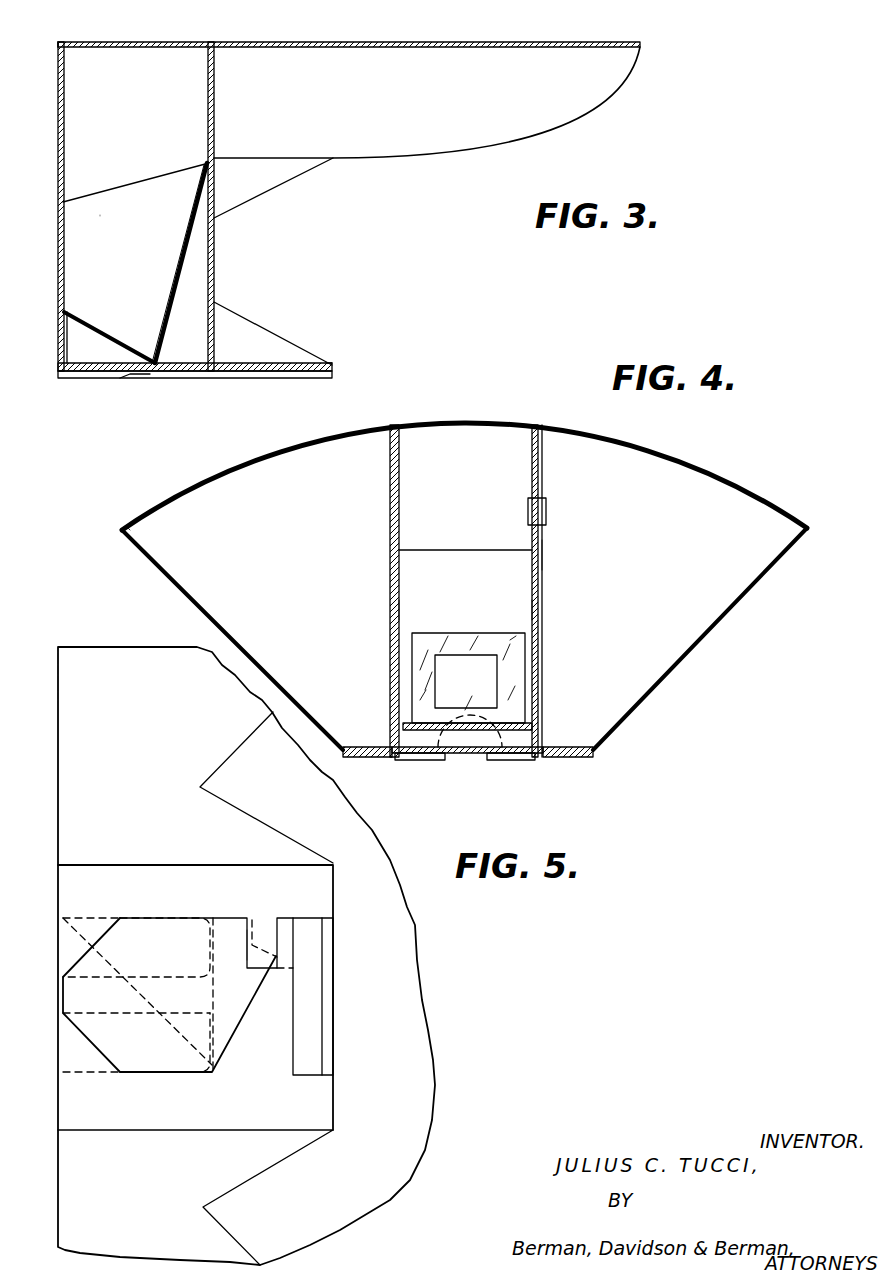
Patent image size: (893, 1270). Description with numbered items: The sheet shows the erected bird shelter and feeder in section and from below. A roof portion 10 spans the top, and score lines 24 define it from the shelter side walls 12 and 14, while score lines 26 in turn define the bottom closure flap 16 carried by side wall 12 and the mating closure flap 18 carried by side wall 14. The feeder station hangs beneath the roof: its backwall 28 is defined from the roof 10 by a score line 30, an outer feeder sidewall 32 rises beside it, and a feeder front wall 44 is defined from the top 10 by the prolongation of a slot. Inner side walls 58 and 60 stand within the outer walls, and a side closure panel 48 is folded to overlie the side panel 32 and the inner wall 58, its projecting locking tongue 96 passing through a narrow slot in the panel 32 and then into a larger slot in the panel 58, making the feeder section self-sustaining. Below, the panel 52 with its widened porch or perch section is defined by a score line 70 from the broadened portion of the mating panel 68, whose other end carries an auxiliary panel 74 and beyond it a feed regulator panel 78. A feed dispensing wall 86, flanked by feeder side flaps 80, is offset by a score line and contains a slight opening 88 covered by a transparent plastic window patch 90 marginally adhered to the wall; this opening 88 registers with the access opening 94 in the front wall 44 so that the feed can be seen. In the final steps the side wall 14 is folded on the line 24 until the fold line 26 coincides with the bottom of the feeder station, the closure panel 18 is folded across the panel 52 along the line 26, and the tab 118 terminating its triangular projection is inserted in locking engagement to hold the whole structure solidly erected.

In FIG. 3, the roof portion 10 is at (363, 43).
In FIG. 4, the roof portion 10 is at (280, 458).
In FIG. 5, the roof portion 10 is at (246, 956).
In FIG. 4, the shelter side wall 12 is at (206, 606).
In FIG. 5, the shelter side wall 12 is at (195, 1197).
In FIG. 3, the shelter side wall 14 is at (273, 188).
In FIG. 4, the shelter side wall 14 is at (730, 606).
In FIG. 5, the shelter side wall 14 is at (240, 787).
In FIG. 5, the bottom closure flap 16 is at (178, 974).
In FIG. 5, the mating closure flap 18 is at (195, 997).
In FIG. 3, the score lines 24 is at (275, 158).
In FIG. 4, the score lines 24 is at (122, 530).
In FIG. 4, the score lines 26 is at (343, 757).
In FIG. 3, the feeder backwall 28 is at (65, 120).
In FIG. 3, the score line 30 is at (55, 42).
In FIG. 4, the outer feeder sidewall 32 is at (545, 463).
In FIG. 3, the feeder front wall 44 is at (215, 106).
In FIG. 4, the feeder front wall 44 is at (465, 516).
In FIG. 4, the side closure panel 48 is at (545, 557).
In FIG. 3, the panel 52 is at (103, 378).
In FIG. 4, the inner side wall 58 is at (531, 453).
In FIG. 4, the inner side wall 60 is at (399, 464).
In FIG. 3, the mating panel 68 is at (200, 363).
In FIG. 3, the score line 70 is at (332, 364).
In FIG. 3, the auxiliary panel 74 is at (67, 347).
In FIG. 3, the feed regulator panel 78 is at (100, 333).
In FIG. 3, the feeder side flaps 80 is at (123, 227).
In FIG. 4, the feeder side flaps 80 is at (399, 613).
In FIG. 3, the feed dispensing wall 86 is at (197, 196).
In FIG. 4, the feed dispensing wall 86 is at (467, 646).
In FIG. 3, the opening 88 is at (181, 272).
In FIG. 4, the opening 88 is at (488, 688).
In FIG. 3, the transparent plastic window patch 90 is at (176, 260).
In FIG. 3, the access opening 94 is at (214, 261).
In FIG. 4, the locking tongue 96 is at (546, 511).
In FIG. 5, the tab 118 is at (262, 926).